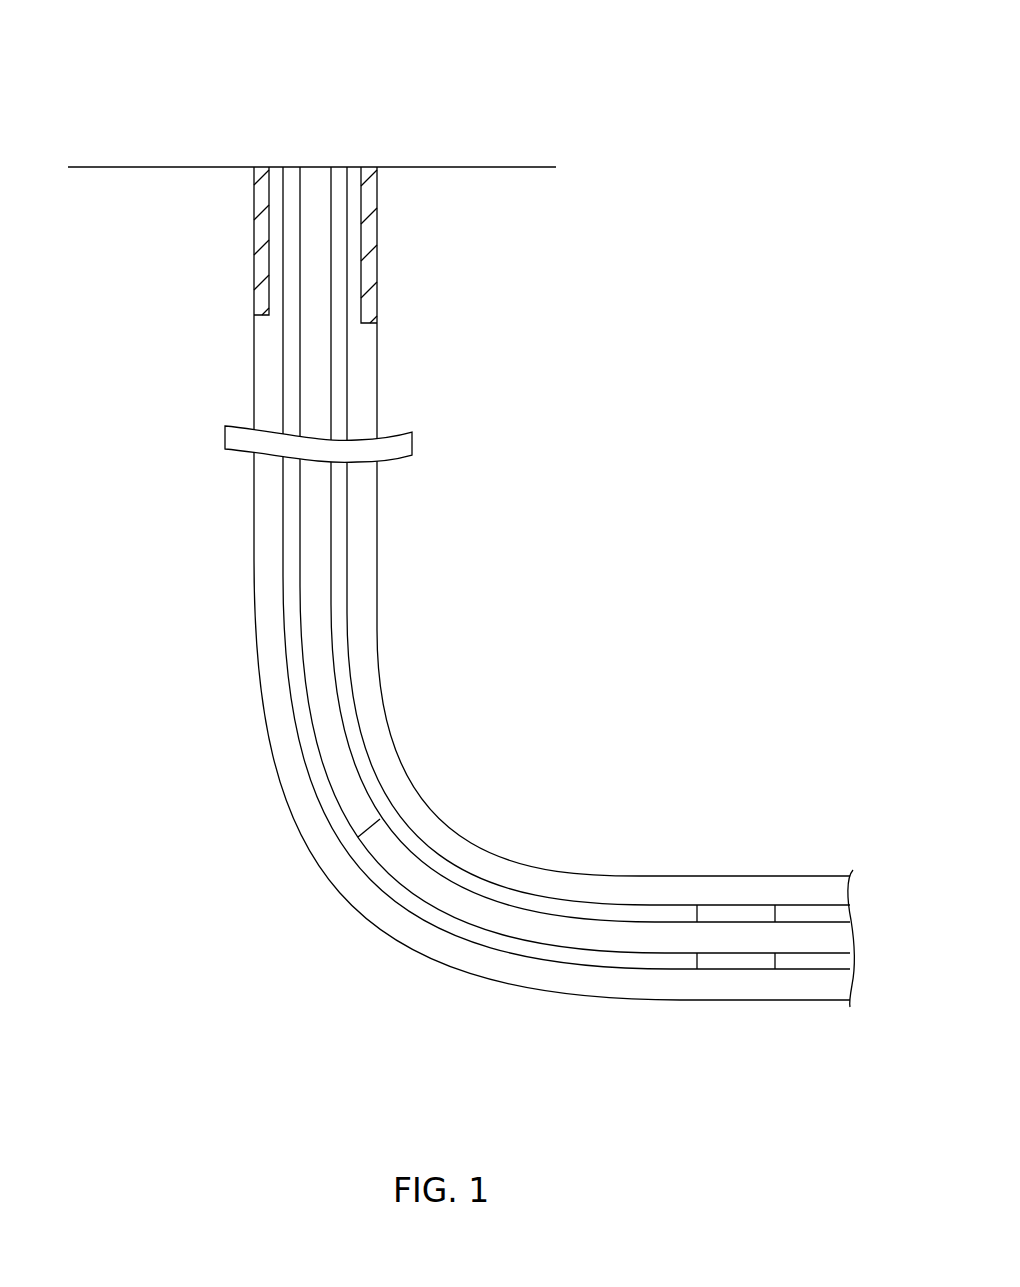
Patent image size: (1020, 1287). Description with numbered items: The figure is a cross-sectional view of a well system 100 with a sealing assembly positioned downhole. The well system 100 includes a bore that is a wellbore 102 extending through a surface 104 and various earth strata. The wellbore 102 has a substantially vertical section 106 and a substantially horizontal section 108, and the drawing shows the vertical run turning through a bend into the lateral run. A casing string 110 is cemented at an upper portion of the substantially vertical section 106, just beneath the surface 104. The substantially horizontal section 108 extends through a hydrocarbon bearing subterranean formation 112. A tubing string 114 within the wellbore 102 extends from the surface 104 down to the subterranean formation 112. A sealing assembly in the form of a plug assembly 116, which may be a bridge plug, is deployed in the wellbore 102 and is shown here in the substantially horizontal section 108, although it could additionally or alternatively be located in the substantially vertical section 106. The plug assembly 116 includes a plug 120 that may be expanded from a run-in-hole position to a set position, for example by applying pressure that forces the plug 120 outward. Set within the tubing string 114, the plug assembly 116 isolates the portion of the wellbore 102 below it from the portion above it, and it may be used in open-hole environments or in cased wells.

The well system 100 is at (588, 88).
The wellbore 102 is at (253, 398).
The surface 104 is at (160, 163).
The substantially vertical section 106 is at (200, 555).
The substantially horizontal section 108 is at (727, 1010).
The casing string 110 is at (368, 222).
The subterranean formation 112 is at (770, 711).
The tubing string 114 is at (350, 358).
The plug assembly 116 is at (452, 893).
The plug 120 is at (730, 915).